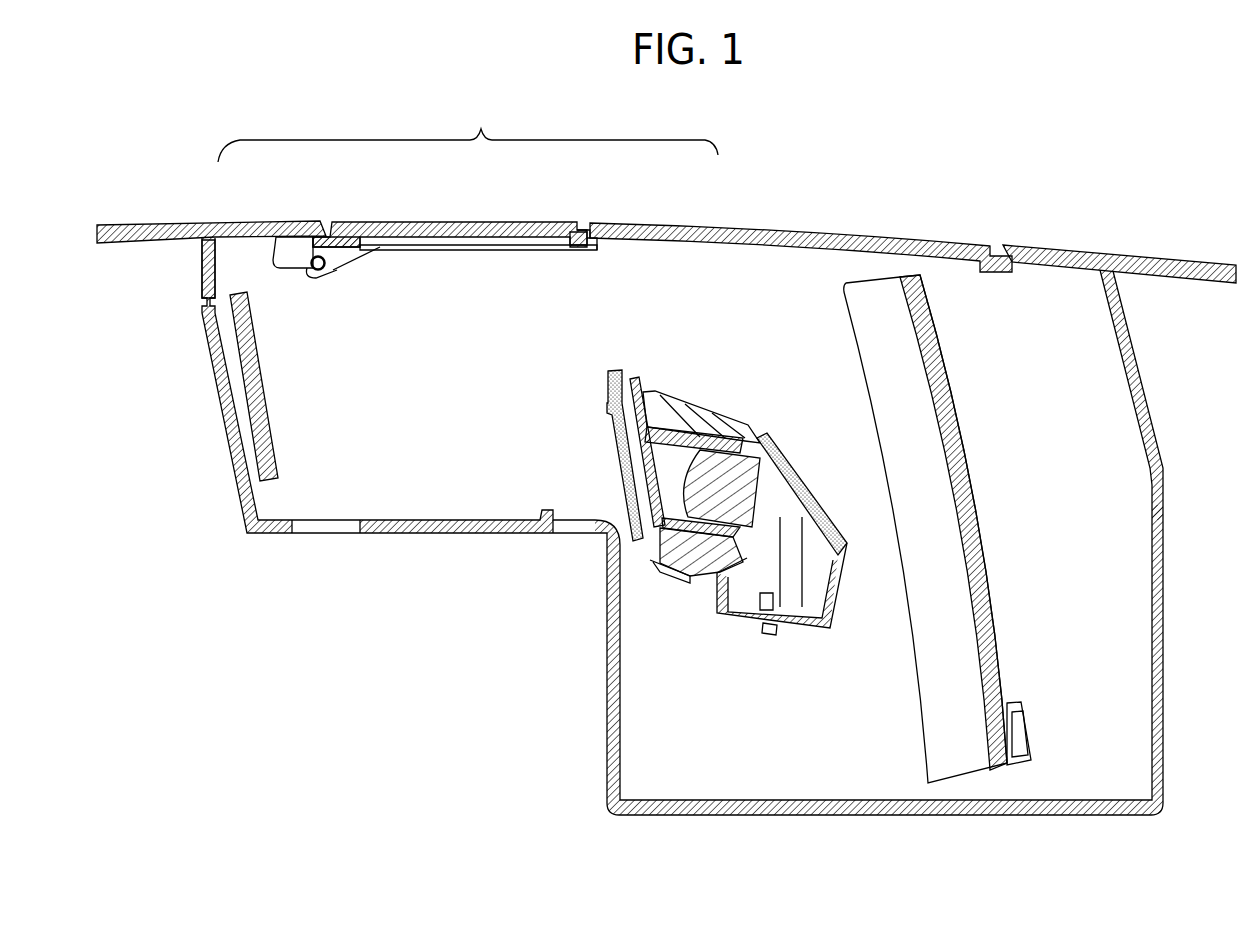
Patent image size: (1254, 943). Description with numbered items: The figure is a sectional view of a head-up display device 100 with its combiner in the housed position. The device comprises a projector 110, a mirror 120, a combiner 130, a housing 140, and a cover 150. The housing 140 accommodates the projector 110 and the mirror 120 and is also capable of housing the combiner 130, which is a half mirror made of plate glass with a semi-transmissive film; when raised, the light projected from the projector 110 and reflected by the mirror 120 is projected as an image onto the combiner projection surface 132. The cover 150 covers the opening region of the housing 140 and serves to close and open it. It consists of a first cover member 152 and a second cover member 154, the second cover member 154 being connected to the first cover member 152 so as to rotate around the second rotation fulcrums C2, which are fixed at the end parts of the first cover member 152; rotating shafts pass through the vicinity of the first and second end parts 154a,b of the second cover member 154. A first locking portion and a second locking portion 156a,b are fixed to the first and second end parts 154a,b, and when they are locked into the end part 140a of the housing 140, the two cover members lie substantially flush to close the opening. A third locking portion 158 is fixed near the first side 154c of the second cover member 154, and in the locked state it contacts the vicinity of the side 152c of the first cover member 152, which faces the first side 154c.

The head-up display device 100 is at (433, 673).
The projector 110 is at (710, 590).
The mirror 120 is at (263, 366).
The combiner 130 is at (963, 433).
The combiner projection surface 132 is at (987, 716).
The housing 140 is at (1165, 552).
The end part 140a is at (322, 247).
The cover 150 is at (468, 128).
The first cover member 152 is at (694, 225).
The side 152c is at (586, 226).
The second cover member 154 is at (466, 222).
The first end part and second end part 154a,b is at (343, 223).
The first side 154c is at (578, 230).
The first locking portion and second locking portion 156a,b is at (283, 237).
The third locking portion 158 is at (596, 252).
The second rotation fulcrum C2 is at (333, 272).